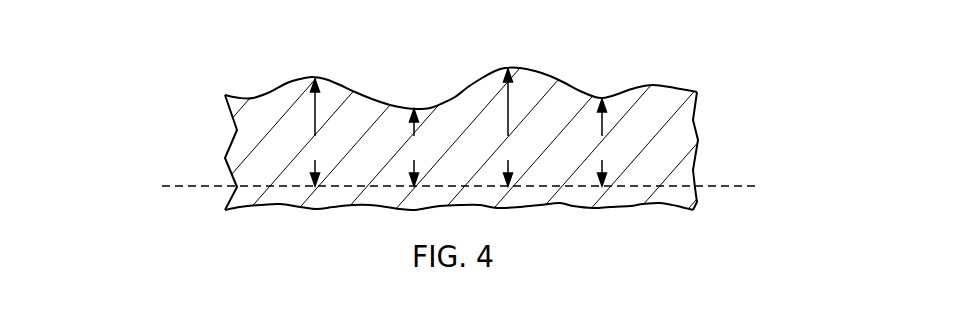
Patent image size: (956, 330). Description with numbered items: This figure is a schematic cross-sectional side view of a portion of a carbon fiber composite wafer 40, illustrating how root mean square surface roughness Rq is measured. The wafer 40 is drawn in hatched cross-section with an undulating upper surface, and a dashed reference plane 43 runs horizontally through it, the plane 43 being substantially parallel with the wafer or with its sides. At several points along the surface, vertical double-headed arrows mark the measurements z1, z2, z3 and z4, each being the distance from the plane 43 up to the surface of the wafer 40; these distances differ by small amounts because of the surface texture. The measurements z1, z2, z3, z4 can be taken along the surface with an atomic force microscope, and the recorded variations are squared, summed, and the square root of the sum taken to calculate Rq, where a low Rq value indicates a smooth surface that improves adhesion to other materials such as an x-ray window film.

The wafer 40 is at (171, 55).
The plane 43 is at (445, 187).
The measurement z1 is at (316, 132).
The measurement z2 is at (415, 147).
The measurement z3 is at (509, 127).
The measurement z4 is at (603, 142).